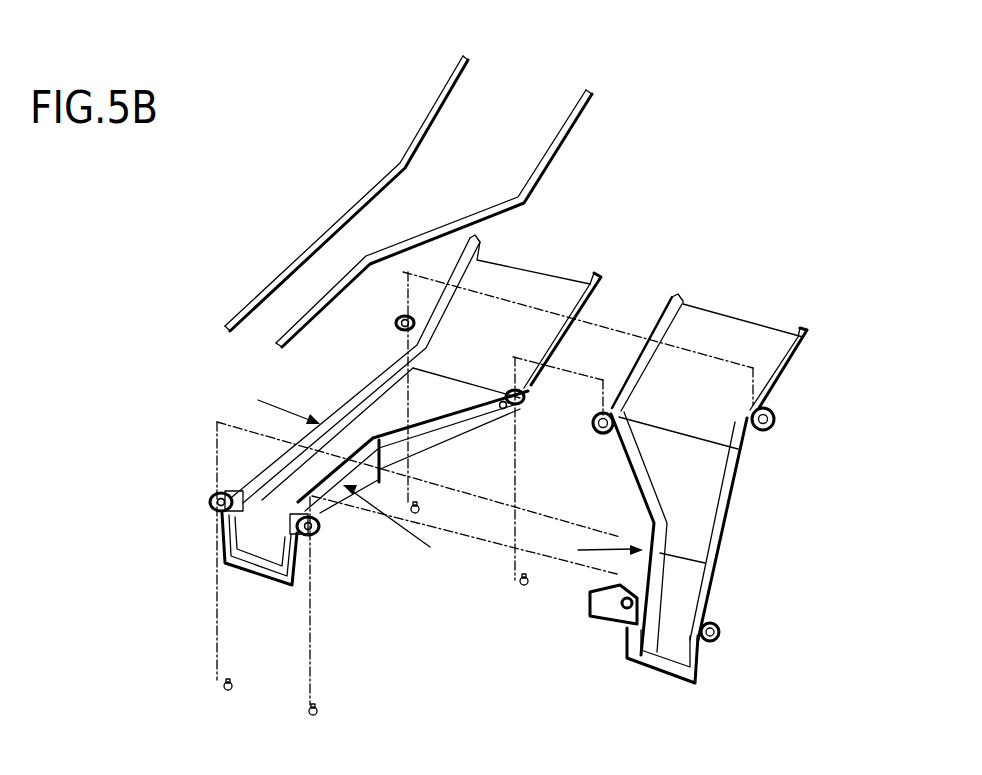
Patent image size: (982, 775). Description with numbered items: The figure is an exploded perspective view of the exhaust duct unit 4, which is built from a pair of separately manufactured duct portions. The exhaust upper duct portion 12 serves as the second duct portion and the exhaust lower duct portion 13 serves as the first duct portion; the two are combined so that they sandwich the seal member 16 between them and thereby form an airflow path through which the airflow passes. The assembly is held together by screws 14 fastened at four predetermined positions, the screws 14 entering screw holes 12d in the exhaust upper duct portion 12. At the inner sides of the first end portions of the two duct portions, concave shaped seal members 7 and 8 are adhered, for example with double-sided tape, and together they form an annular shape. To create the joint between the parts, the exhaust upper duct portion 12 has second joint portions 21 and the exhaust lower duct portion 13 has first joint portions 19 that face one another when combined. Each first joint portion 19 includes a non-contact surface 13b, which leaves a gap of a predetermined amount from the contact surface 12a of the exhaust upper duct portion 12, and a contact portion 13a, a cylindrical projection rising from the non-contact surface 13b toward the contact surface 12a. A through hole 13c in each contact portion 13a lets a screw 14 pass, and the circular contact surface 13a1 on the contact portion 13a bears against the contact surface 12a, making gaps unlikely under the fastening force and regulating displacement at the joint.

The exhaust duct unit 4 is at (690, 225).
The seal member 16 is at (470, 58).
The exhaust lower duct portion 13 is at (359, 427).
The contact portion 13a is at (398, 328).
The contact surface 13a1 is at (378, 471).
The non-contact surface 13b is at (338, 408).
The through hole 13c is at (402, 314).
The first joint portion 19 is at (343, 475).
The screw 14 is at (424, 508).
The seal member 8 is at (255, 572).
The exhaust upper duct portion 12 is at (701, 496).
The contact surface 12a is at (637, 490).
The screw hole 12d is at (605, 405).
The second joint portion 21 is at (671, 615).
The seal member 7 is at (655, 682).